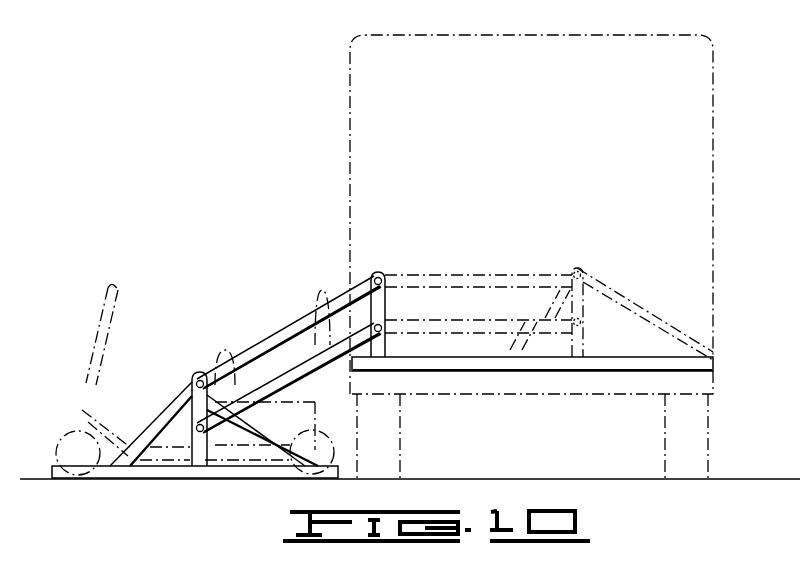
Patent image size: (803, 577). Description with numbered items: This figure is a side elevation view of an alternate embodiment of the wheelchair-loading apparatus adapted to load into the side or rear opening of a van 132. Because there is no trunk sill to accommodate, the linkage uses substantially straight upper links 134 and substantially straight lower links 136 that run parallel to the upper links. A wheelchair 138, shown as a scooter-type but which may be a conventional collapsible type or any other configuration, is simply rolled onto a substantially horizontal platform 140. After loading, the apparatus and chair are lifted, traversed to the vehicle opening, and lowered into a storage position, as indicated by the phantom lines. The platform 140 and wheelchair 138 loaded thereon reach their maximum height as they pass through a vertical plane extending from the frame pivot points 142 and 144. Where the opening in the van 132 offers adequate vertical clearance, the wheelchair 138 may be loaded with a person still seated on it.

The van 132 is at (713, 108).
The upper links 134 is at (282, 322).
The lower links 136 is at (330, 370).
The wheelchair 138 is at (108, 292).
The platform 140 is at (134, 476).
The frame pivot point 142 is at (378, 279).
The frame pivot point 144 is at (382, 325).